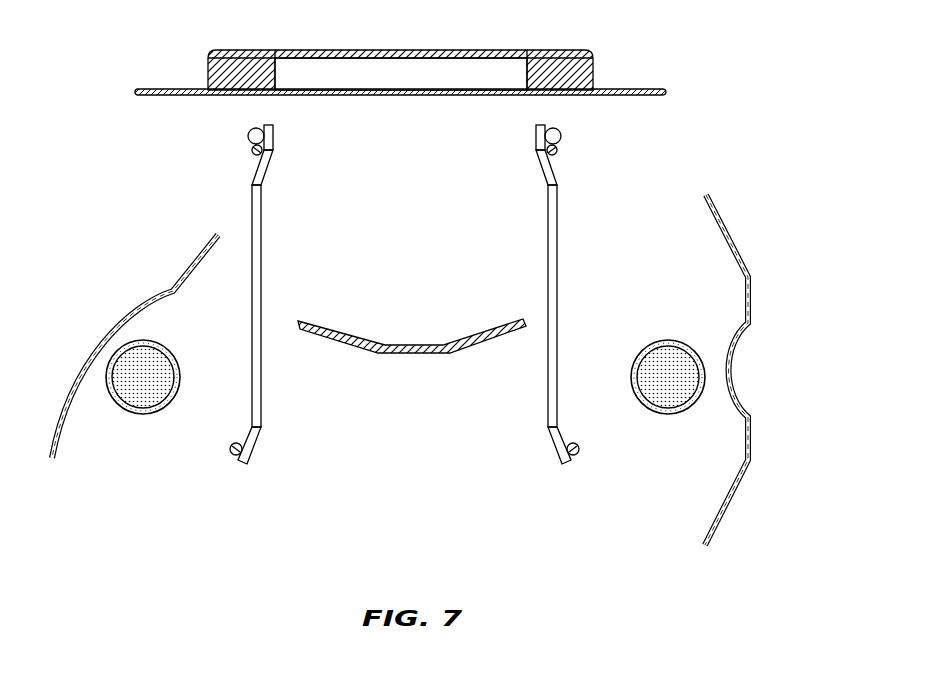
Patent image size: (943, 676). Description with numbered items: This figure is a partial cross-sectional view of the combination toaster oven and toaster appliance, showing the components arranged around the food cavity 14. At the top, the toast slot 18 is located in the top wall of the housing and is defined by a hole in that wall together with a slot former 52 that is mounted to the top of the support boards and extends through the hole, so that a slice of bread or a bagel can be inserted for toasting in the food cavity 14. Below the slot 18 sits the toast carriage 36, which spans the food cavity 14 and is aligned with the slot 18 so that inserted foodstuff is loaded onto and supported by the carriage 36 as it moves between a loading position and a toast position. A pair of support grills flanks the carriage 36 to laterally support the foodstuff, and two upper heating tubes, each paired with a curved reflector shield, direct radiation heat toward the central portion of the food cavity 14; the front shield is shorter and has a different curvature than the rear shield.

The food cavity 14 is at (487, 512).
The toast slot 18 is at (362, 68).
The toast carriage 36 is at (405, 357).
The slot former 52 is at (591, 70).